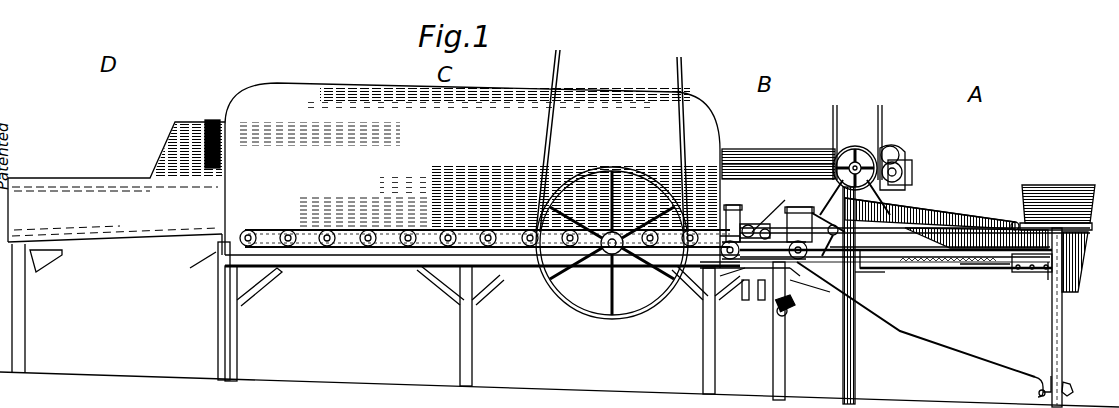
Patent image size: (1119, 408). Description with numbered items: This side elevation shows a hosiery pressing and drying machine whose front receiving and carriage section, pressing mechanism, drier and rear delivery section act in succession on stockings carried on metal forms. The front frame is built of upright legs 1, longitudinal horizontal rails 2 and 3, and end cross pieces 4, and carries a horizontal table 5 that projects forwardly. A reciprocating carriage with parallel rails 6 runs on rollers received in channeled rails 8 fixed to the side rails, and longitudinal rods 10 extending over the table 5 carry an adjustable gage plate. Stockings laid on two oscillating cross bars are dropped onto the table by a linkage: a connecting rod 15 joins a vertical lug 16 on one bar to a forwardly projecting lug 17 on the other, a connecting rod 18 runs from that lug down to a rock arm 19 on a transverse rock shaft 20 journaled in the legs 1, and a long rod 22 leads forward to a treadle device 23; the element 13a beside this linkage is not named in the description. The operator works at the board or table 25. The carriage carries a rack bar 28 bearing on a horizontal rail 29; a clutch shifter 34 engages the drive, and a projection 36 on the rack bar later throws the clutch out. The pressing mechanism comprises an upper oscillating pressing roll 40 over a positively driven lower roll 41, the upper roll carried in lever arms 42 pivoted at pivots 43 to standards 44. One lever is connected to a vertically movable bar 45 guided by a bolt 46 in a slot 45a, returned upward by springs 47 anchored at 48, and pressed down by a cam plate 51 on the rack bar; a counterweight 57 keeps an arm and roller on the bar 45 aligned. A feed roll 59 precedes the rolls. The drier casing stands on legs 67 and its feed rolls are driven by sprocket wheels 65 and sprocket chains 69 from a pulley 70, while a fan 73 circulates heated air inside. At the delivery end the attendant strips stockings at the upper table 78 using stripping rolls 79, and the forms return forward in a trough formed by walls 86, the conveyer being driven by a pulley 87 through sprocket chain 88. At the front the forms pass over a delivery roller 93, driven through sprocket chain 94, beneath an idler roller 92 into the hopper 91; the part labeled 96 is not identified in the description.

The upright supports or legs 1 is at (1052, 328).
The longitudinal horizontal rails 2 is at (935, 270).
The longitudinal horizontal rails 3 is at (905, 215).
The end rails or cross pieces 4 is at (1046, 285).
The horizontal table 5 is at (934, 255).
The carriage rails 6 is at (1030, 272).
The channeled rails 8 is at (912, 270).
The longitudinal rods 10 is at (976, 238).
The arm 13a is at (834, 222).
The connecting rod 15 is at (900, 232).
The vertically extending lug 16 is at (1012, 222).
The forwardly projecting lug 17 is at (850, 236).
The connecting rod 18 is at (808, 282).
The rock arm 19 is at (793, 308).
The transverse rock shaft 20 is at (778, 314).
The long rod 22 is at (918, 340).
The treadle device 23 is at (1069, 383).
The horizontal board or table 25 is at (1056, 250).
The rack bar 28 is at (895, 278).
The horizontal rail 29 is at (992, 270).
The clutch shifter 34 is at (815, 292).
The projection 36 is at (958, 270).
The oscillating pressing roll 40 is at (725, 224).
The lower driven roll 41 is at (722, 237).
The lever arms 42 is at (733, 206).
The lever pivot 43 is at (766, 228).
The posts or standards 44 is at (799, 207).
The vertical movable bar 45 is at (745, 300).
The slot 45a is at (742, 296).
The bolt 46 is at (761, 300).
The springs 47 is at (770, 205).
The spring anchorage 48 is at (750, 224).
The cam bar or plate 51 is at (890, 270).
The counterweight 57 is at (718, 283).
The transverse feed roll 59 is at (825, 240).
The sprocket wheels 65 is at (282, 229).
The legs 67 is at (218, 325).
The sprocket chains 69 is at (350, 230).
The pulley 70 is at (593, 171).
The fan 73 is at (212, 118).
The upper table 78 is at (92, 178).
The stripping rolls 79 is at (100, 242).
The trough walls 86 is at (748, 152).
The pulley 87 is at (850, 147).
The sprocket chain 88 is at (788, 152).
The receiver or hopper 91 is at (950, 218).
The idler roller 92 is at (913, 165).
The final or delivery roller 93 is at (893, 152).
The sprocket chain 94 is at (908, 156).
The hopper 96 is at (1058, 204).